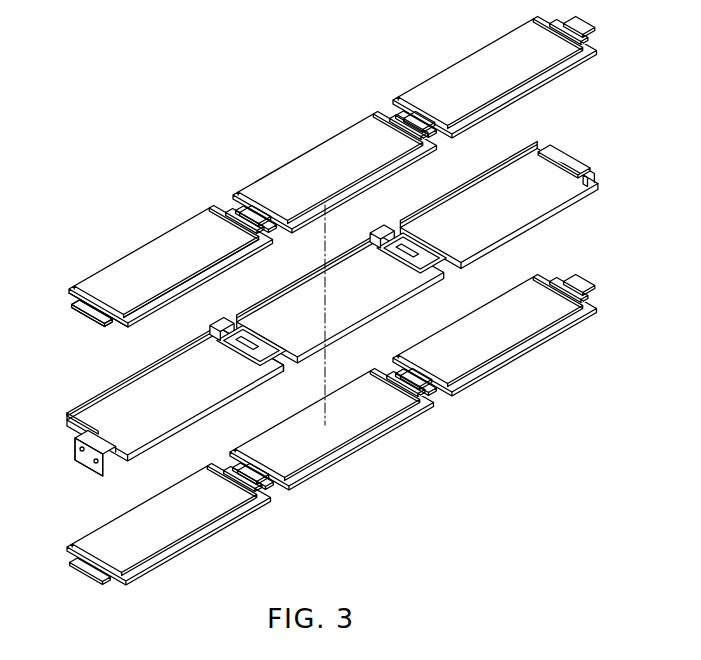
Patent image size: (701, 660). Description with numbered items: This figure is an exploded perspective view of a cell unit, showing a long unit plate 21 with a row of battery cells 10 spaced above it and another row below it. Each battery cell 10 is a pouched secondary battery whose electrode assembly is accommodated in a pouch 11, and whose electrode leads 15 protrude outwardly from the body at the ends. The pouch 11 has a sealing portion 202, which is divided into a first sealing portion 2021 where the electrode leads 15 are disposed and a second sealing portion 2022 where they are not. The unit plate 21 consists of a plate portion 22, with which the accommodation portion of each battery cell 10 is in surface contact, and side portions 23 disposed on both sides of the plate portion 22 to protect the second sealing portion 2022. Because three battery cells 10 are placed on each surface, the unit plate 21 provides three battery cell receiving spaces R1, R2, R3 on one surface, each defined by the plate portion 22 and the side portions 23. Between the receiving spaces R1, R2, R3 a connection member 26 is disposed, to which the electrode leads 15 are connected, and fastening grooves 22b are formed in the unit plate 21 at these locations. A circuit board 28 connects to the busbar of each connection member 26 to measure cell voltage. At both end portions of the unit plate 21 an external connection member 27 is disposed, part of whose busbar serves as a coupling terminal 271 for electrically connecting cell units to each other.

The battery cell 10 is at (448, 64).
The pouch 11 is at (98, 285).
The electrode lead 15 is at (78, 304).
The sealing portion 202 is at (148, 161).
The first sealing portion 2021 is at (121, 316).
The second sealing portion 2022 is at (173, 295).
The unit plate 21 is at (558, 153).
The plate portion 22 is at (547, 188).
The fastening groove 22b is at (284, 368).
The side portion 23 is at (563, 210).
The connection member 26 is at (444, 249).
The external connection member 27 is at (75, 443).
The circuit board 28 is at (385, 240).
The coupling terminal 271 is at (75, 455).
The battery cell receiving space R1 is at (218, 413).
The battery cell receiving space R2 is at (304, 320).
The battery cell receiving space R3 is at (513, 205).